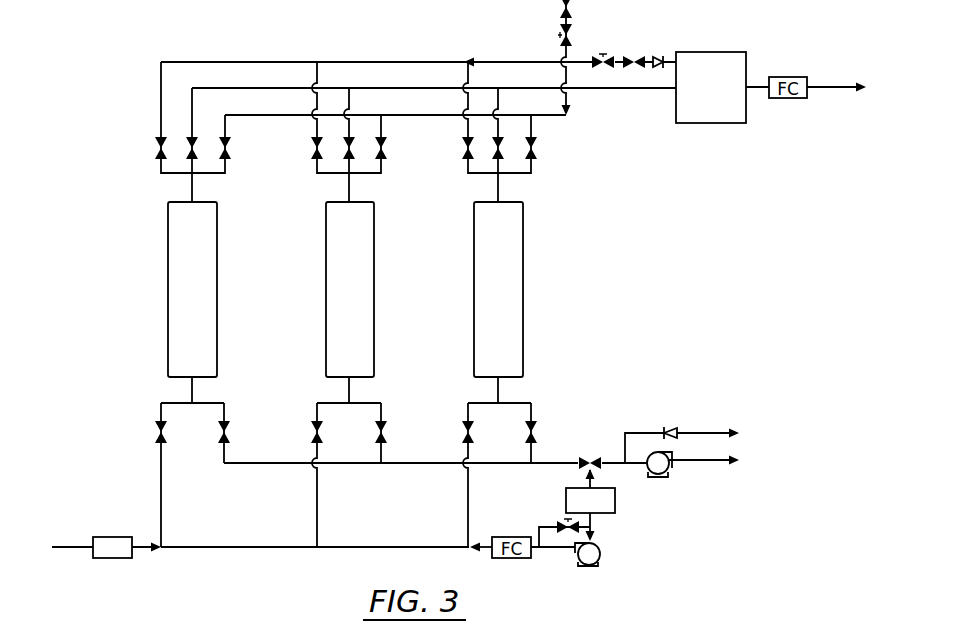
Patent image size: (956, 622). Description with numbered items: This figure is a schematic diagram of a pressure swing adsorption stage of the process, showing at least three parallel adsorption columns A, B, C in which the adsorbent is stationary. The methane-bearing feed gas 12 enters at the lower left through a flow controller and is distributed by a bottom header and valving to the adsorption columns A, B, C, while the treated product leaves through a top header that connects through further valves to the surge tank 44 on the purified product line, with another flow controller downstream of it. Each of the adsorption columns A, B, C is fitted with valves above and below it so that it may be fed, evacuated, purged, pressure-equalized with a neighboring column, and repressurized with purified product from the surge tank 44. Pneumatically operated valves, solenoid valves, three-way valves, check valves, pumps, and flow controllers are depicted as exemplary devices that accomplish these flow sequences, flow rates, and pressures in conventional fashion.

The methane-bearing feed gas 12 is at (82, 547).
The surge tank 44 is at (705, 123).
The first adsorption column A is at (193, 304).
The second adsorption column B is at (349, 304).
The third adsorption column C is at (499, 304).